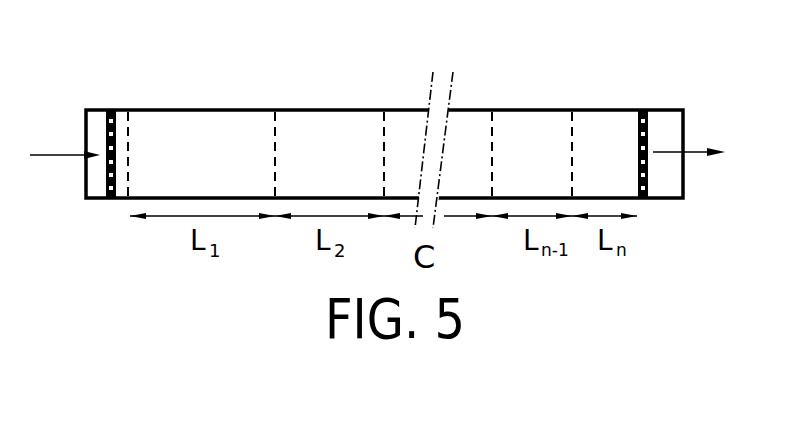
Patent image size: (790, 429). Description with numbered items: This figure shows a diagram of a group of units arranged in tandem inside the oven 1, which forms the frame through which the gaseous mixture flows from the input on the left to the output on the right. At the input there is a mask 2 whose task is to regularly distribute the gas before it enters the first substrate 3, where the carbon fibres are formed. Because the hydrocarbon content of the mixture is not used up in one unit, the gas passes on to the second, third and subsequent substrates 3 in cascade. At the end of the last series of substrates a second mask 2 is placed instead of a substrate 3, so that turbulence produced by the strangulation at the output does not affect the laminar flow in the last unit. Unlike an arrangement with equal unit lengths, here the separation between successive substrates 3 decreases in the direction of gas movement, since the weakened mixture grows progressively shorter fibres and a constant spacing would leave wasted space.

The oven 1 is at (205, 165).
The mask 2 is at (120, 147).
The substrate 3 is at (130, 175).